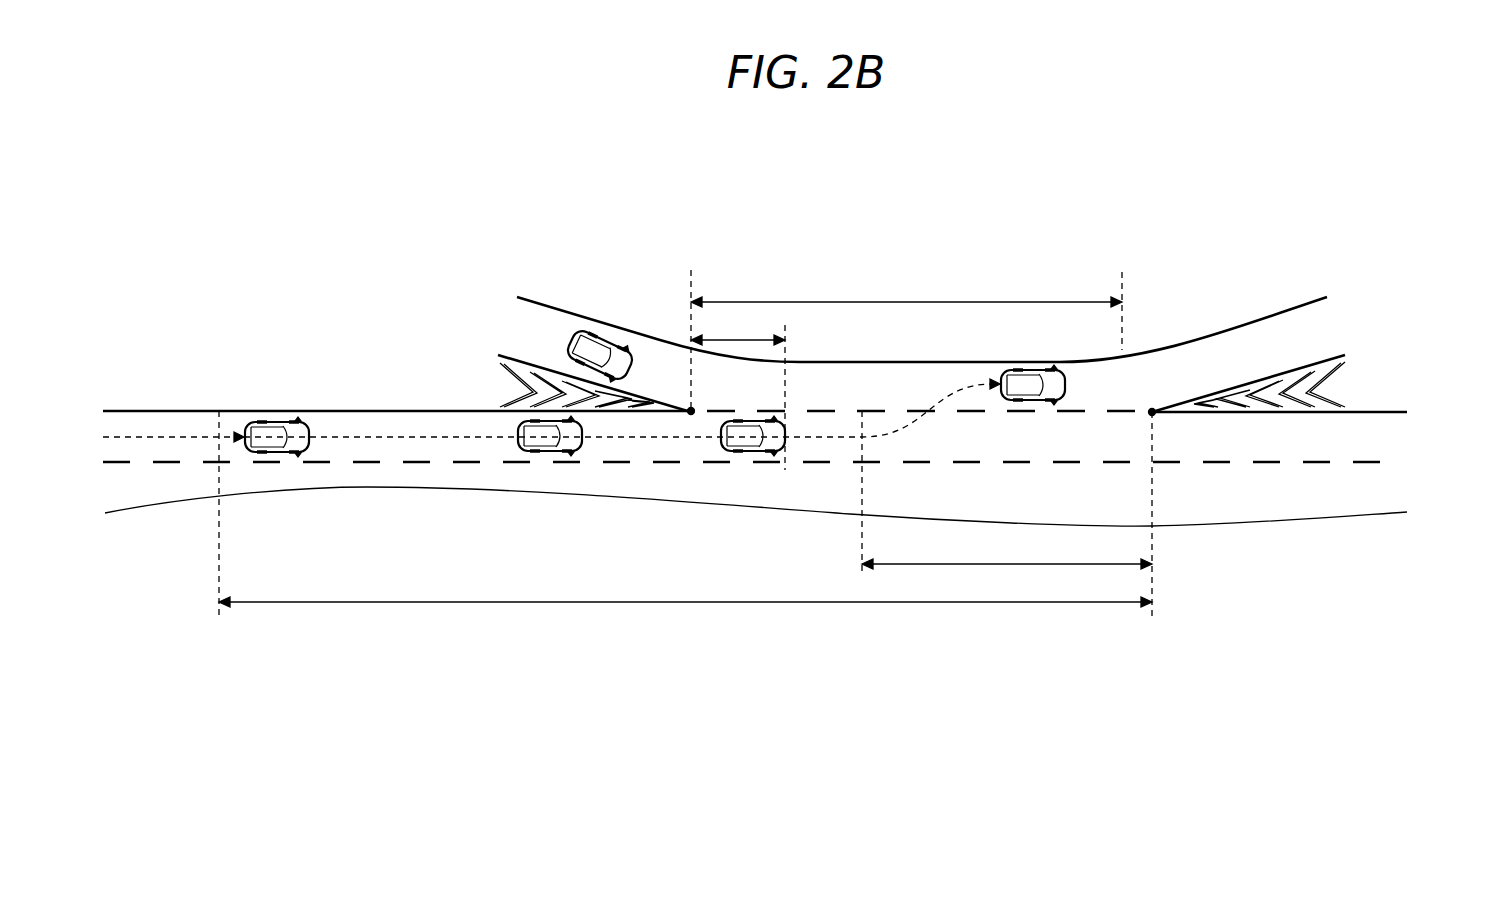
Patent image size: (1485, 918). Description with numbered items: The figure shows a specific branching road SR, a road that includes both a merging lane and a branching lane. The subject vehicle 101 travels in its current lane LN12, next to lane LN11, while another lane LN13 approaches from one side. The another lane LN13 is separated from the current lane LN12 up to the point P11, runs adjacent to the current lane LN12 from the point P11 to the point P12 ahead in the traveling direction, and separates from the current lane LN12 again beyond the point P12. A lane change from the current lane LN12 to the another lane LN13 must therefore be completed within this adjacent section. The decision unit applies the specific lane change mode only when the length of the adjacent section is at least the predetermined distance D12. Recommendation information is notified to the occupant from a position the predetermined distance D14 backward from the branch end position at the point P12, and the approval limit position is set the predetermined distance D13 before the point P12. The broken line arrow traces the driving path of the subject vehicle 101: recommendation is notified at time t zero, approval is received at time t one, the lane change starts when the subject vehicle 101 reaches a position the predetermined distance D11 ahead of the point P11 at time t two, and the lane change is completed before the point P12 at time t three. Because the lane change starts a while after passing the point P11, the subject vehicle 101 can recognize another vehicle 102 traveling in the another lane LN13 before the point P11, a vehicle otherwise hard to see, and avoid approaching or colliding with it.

The subject vehicle 101 is at (275, 421).
The another vehicle 102 is at (612, 338).
The point P11 is at (689, 405).
The point P12 is at (1154, 407).
The predetermined distance D11 is at (738, 327).
The predetermined distance D12 is at (906, 289).
The predetermined distance D13 is at (1007, 551).
The predetermined distance D14 is at (685, 589).
The lane LN11 is at (1355, 497).
The current lane LN12 is at (1355, 447).
The another lane LN13 is at (1290, 337).
The specific branching road SR is at (1178, 244).